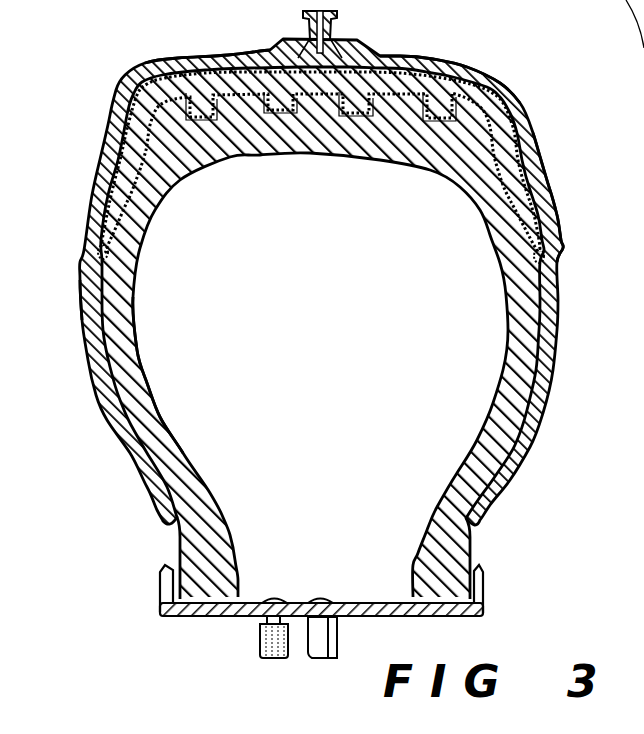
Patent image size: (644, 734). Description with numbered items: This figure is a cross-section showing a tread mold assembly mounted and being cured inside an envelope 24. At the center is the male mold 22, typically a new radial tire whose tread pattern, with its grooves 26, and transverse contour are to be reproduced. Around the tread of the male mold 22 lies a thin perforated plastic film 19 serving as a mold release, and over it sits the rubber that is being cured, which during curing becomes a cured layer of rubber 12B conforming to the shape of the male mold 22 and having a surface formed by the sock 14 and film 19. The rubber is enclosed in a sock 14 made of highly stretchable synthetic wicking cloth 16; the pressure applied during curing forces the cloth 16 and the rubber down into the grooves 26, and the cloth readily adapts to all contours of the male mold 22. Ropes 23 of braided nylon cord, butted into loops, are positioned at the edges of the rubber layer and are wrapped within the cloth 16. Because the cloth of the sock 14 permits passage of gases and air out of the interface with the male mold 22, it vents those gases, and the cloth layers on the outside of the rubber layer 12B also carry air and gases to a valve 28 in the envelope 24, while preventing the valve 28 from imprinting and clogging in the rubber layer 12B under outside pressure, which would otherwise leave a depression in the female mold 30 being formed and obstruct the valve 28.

The cured layer of rubber 12B is at (227, 80).
The sock 14 is at (143, 85).
The cloth 16 is at (253, 54).
The film 19 is at (152, 203).
The male mold 22 is at (130, 358).
The ropes 23 is at (97, 246).
The envelope 24 is at (540, 184).
The grooves 26 is at (427, 127).
The valve 28 is at (333, 31).
The female mold 30 is at (443, 60).